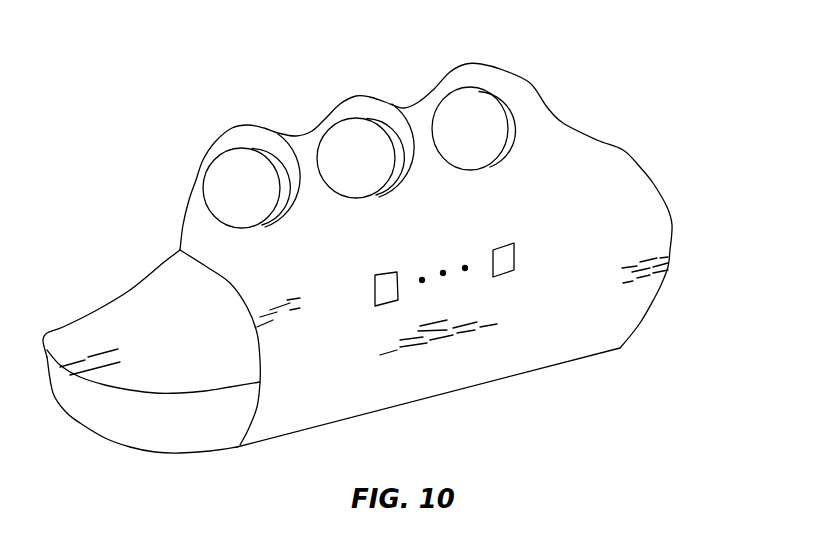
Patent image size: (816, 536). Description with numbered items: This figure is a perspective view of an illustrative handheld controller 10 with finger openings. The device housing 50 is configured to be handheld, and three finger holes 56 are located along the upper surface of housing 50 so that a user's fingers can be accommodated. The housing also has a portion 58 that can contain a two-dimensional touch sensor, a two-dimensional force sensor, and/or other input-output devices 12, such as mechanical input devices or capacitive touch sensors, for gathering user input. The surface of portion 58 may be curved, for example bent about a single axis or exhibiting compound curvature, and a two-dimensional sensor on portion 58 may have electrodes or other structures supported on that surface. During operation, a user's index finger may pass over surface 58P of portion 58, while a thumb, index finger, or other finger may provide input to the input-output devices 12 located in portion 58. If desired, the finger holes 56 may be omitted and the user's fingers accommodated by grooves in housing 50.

The electronic device 10 is at (384, 267).
The input-output devices 12 is at (496, 252).
The device housing 50 is at (662, 219).
The finger holes 56 is at (447, 122).
The portion 58 is at (163, 373).
The surface 58P is at (117, 285).